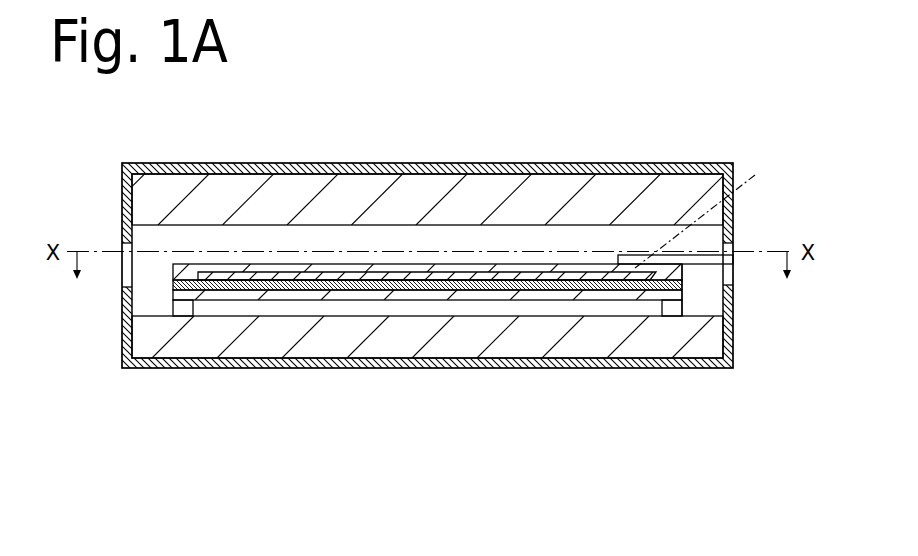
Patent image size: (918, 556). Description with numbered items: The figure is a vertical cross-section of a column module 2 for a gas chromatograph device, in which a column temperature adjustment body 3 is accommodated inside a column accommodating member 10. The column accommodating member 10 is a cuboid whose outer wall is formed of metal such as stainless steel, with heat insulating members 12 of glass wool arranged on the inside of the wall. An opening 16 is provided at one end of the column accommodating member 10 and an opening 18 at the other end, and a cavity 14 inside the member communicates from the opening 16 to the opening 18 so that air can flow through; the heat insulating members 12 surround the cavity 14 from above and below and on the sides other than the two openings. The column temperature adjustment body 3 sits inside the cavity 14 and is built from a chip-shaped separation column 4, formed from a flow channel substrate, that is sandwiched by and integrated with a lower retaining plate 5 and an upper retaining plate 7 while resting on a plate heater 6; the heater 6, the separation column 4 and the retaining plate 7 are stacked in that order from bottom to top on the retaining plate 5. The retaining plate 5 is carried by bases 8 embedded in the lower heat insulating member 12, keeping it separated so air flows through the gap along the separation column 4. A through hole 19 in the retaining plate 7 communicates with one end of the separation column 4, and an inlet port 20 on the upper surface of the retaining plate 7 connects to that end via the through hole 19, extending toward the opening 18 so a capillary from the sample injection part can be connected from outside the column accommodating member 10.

The column module 2 is at (717, 147).
The column temperature adjustment body 3 is at (474, 265).
The separation column 4 is at (428, 272).
The retaining plate 5 is at (546, 292).
The plate heater 6 is at (455, 283).
The retaining plate 7 is at (462, 272).
The bases 8 is at (670, 304).
The column accommodating member 10 is at (592, 165).
The heat insulating members 12 is at (487, 192).
The cavity 14 is at (308, 308).
The opening 16 is at (128, 272).
The opening 18 is at (734, 279).
The through hole 19 is at (708, 213).
The inlet port 20 is at (708, 257).